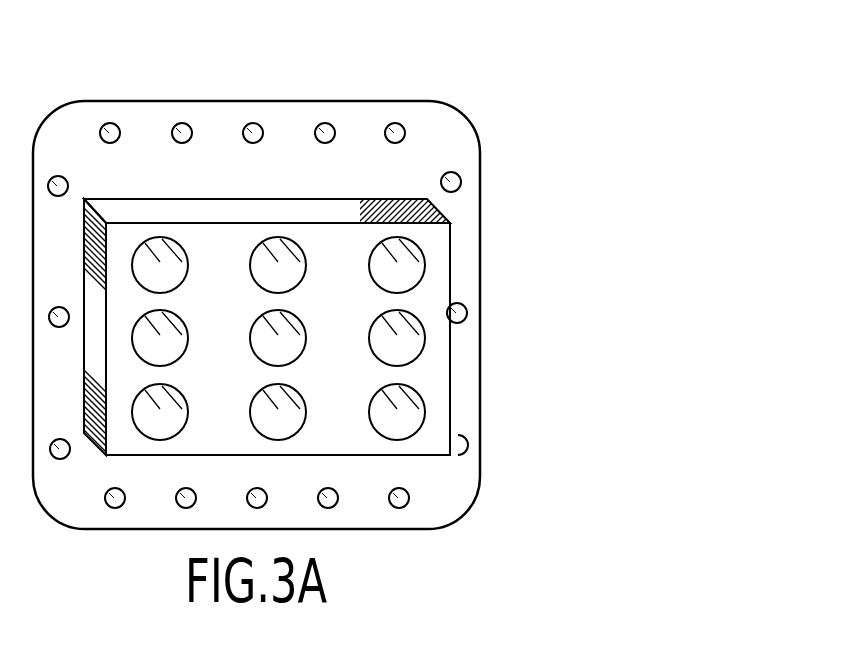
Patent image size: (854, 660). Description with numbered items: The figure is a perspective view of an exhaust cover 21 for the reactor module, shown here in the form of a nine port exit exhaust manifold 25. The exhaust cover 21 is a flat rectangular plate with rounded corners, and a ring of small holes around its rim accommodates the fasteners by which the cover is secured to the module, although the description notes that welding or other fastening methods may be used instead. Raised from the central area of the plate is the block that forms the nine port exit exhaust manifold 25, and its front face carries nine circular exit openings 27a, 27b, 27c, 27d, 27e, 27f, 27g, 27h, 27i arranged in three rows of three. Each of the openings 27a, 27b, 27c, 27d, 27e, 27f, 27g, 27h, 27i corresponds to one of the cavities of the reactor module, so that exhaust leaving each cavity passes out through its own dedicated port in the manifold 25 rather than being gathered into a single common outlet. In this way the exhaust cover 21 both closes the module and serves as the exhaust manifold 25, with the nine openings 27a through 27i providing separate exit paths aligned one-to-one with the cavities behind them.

The exhaust cover 21 is at (450, 78).
The nine port exit exhaust manifold 25 is at (435, 487).
The opening 27a is at (158, 278).
The opening 27b is at (276, 278).
The opening 27c is at (396, 278).
The opening 27d is at (158, 351).
The opening 27e is at (276, 351).
The opening 27f is at (396, 352).
The opening 27g is at (158, 425).
The opening 27h is at (276, 425).
The opening 27i is at (396, 425).